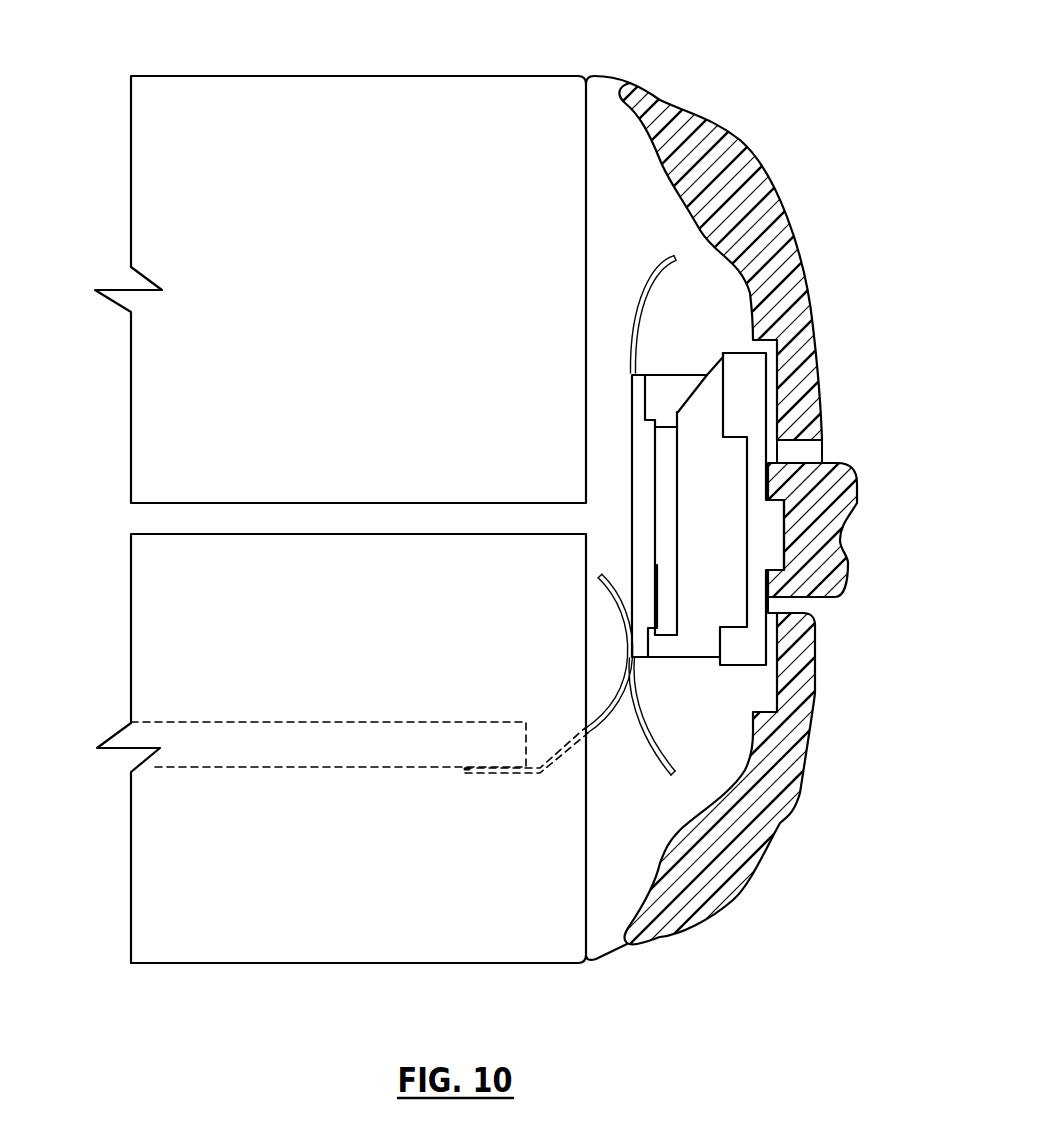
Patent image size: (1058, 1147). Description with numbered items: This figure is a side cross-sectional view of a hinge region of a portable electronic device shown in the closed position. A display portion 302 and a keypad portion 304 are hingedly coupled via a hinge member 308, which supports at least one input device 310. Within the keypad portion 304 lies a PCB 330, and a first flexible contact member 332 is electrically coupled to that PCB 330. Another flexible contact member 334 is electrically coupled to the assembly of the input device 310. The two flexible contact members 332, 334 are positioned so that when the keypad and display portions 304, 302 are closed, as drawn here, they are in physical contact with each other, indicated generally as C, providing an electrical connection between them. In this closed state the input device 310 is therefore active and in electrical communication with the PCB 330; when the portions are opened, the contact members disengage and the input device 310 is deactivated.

The display portion 302 is at (370, 77).
The keypad portion 304 is at (157, 965).
The hinge member 308 is at (703, 897).
The input device 310 is at (826, 598).
The PCB 330 is at (183, 722).
The first flexible contact member 332 is at (620, 610).
The flexible contact member 334 is at (665, 762).
The physical contact C is at (640, 666).